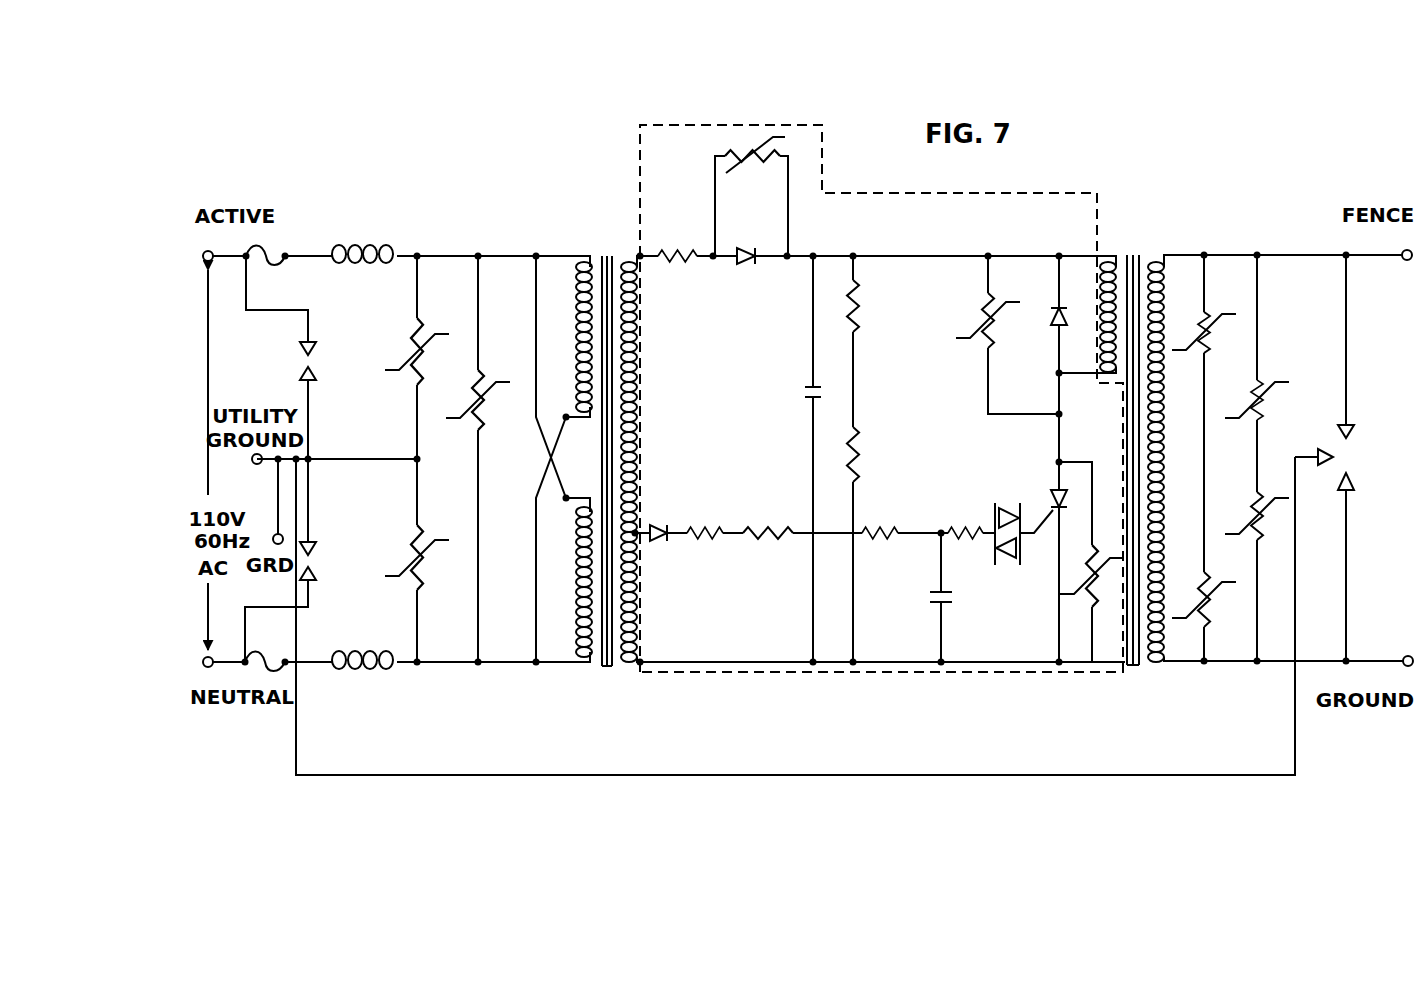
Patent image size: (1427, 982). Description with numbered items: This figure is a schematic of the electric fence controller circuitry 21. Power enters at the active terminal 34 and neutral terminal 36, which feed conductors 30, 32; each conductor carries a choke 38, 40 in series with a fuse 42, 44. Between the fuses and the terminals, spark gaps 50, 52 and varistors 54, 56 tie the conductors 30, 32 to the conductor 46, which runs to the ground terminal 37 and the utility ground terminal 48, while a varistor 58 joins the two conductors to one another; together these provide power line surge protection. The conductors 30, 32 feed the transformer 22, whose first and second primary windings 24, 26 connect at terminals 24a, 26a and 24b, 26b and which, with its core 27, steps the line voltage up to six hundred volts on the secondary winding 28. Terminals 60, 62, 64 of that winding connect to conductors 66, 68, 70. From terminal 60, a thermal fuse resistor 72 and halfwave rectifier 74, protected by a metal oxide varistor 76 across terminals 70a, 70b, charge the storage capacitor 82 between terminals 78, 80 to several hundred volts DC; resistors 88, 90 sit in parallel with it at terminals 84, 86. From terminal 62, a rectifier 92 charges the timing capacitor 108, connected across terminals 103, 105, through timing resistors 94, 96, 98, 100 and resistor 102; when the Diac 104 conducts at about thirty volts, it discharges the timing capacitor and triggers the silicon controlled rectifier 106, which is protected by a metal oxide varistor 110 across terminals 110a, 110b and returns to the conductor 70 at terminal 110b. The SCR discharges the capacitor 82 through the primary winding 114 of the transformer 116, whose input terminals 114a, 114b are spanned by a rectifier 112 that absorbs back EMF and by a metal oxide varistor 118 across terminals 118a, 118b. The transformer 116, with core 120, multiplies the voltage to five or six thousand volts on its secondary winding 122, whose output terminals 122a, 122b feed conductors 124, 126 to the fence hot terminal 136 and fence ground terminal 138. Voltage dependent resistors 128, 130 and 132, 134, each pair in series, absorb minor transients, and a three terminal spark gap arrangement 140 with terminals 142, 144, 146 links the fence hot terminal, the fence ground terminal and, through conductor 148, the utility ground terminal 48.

The fence charger circuit 21 is at (1046, 192).
The transformer 22 is at (613, 250).
The first primary winding 24 is at (578, 322).
The terminal of the first primary winding 24a is at (538, 255).
The terminal of the first primary winding 24b is at (565, 418).
The second primary winding 26 is at (577, 570).
The terminal of the second primary winding 26a is at (565, 498).
The terminal of the second primary winding 26b is at (540, 666).
The core 27 is at (602, 666).
The secondary winding 28 is at (634, 440).
The conductor 30 is at (462, 254).
The conductor 32 is at (455, 665).
The active terminal 34 is at (212, 252).
The neutral terminal 36 is at (212, 655).
The ground terminal 37 is at (274, 534).
The choke 38 is at (378, 248).
The choke 40 is at (363, 650).
The fuse 42 is at (268, 250).
The fuse 44 is at (262, 652).
The conductor 46 is at (360, 455).
The utility ground terminal 48 is at (258, 464).
The spark gap 50 is at (320, 352).
The spark gap 52 is at (322, 560).
The varistor 54 is at (422, 327).
The varistor 56 is at (425, 562).
The varistor 58 is at (482, 370).
The terminal 60 is at (641, 255).
The terminal 62 is at (636, 538).
The terminal 64 is at (640, 665).
The conductor 66 is at (650, 263).
The conductor 68 is at (648, 525).
The conductor 70 is at (700, 672).
The terminal 70a is at (714, 258).
The terminal 70b is at (786, 258).
The resistor 72 is at (683, 257).
The halfwave rectifier 74 is at (745, 245).
The metal oxide varistor 76 is at (791, 145).
The terminal 78 is at (814, 255).
The terminal 80 is at (813, 668).
The capacitor 82 is at (808, 390).
The terminal 84 is at (854, 255).
The terminal 86 is at (853, 668).
The resistor 88 is at (858, 305).
The resistor 90 is at (858, 455).
The rectifier 92 is at (668, 530).
The resistor 94 is at (705, 540).
The resistor 96 is at (768, 530).
The resistor 98 is at (875, 530).
The resistor 100 is at (912, 538).
The resistor 102 is at (965, 530).
The terminal 103 is at (941, 532).
The Diac 104 is at (1022, 550).
The terminal 105 is at (942, 668).
The silicon controlled rectifier 106 is at (1052, 490).
The capacitor 108 is at (932, 600).
The metal oxide varistor 110 is at (1094, 598).
The terminal 110a is at (1062, 462).
The terminal 110b is at (1058, 661).
The rectifier 112 is at (1053, 326).
The primary winding 114 is at (1100, 303).
The input terminal 114a is at (1060, 255).
The input terminal 114b is at (1061, 376).
The transformer 116 is at (1131, 248).
The metal oxide varistor 118 is at (978, 345).
The terminal 118a is at (988, 255).
The terminal 118b is at (1055, 416).
The core 120 is at (1125, 668).
The secondary winding 122 is at (1160, 475).
The output terminal 122a is at (1204, 254).
The output terminal 122b is at (1204, 668).
The conductor 124 is at (1378, 253).
The conductor 126 is at (1378, 666).
The voltage dependent resistor 128 is at (1208, 312).
The voltage dependent resistor 130 is at (1210, 600).
The voltage dependent resistor 132 is at (1262, 380).
The voltage dependent resistor 134 is at (1252, 505).
The hot terminal 136 is at (1405, 261).
The ground terminal 138 is at (1406, 656).
The three terminal spark gap arrangement 140 is at (1334, 458).
The terminal 142 is at (1350, 430).
The terminal 144 is at (1352, 480).
The terminal 146 is at (1322, 465).
The conductor 148 is at (836, 776).